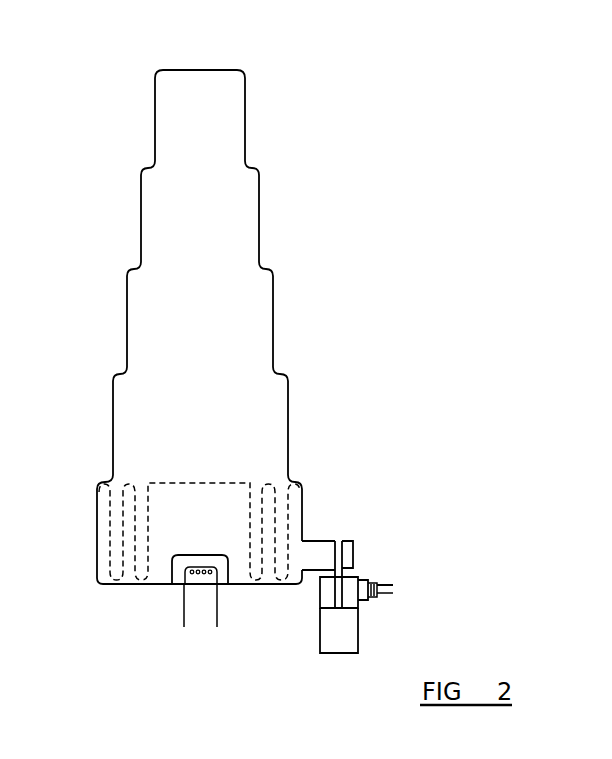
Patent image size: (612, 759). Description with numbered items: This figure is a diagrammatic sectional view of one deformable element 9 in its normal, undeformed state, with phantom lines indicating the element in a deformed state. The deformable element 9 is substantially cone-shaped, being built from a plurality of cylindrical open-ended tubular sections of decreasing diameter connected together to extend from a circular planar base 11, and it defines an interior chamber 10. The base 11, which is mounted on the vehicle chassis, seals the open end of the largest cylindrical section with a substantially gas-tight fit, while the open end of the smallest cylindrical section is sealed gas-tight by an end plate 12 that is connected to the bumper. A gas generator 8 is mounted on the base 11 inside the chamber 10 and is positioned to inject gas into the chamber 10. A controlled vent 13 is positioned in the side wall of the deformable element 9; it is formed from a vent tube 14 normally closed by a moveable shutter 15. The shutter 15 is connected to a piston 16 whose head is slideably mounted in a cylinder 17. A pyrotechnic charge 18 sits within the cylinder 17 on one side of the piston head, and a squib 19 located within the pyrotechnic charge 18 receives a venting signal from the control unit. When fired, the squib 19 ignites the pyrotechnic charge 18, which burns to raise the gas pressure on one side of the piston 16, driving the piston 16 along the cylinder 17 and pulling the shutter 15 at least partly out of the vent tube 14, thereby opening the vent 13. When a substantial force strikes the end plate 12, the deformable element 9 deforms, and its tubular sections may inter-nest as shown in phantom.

The gas generator 8 is at (174, 578).
The deformable element 9 is at (245, 137).
The interior chamber 10 is at (242, 215).
The circular planar base 11 is at (122, 585).
The end plate 12 is at (220, 70).
The controlled vent 13 is at (402, 620).
The vent tube 14 is at (318, 541).
The moveable shutter 15 is at (353, 552).
The piston 16 is at (335, 588).
The cylinder 17 is at (320, 623).
The pyrotechnic charge 18 is at (377, 581).
The squib 19 is at (377, 598).